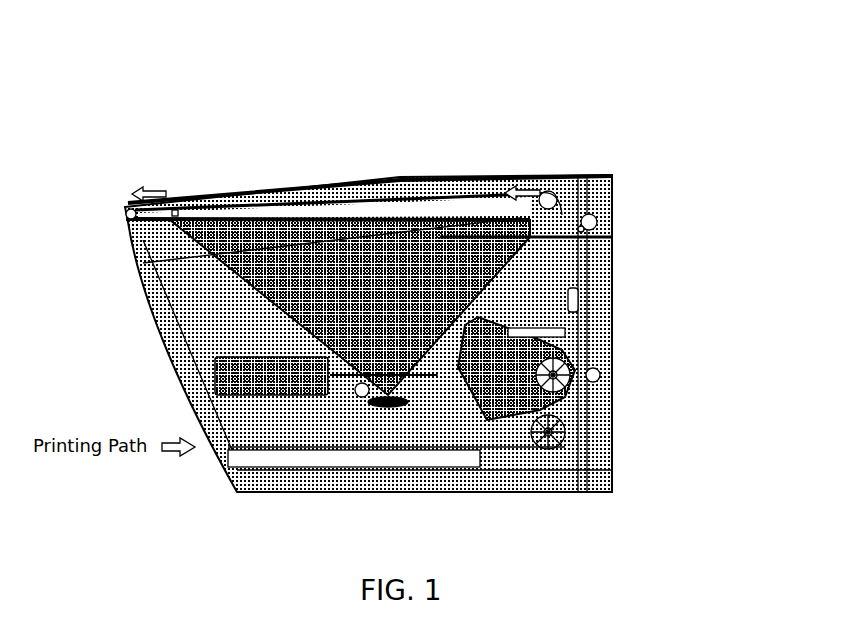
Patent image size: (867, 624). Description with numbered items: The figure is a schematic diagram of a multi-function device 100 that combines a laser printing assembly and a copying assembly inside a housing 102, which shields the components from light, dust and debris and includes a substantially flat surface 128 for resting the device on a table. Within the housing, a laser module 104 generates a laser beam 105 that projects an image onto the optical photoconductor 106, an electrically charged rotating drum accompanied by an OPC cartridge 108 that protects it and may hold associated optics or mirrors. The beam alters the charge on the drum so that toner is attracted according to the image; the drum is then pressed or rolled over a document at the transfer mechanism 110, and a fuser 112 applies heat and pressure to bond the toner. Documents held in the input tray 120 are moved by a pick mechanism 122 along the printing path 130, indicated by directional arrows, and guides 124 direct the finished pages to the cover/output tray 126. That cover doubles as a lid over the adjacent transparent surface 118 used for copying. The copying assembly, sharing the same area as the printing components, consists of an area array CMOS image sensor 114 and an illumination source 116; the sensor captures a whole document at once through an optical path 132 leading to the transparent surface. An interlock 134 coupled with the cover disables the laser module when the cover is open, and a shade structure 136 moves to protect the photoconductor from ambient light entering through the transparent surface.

The multi-function device 100 is at (593, 50).
The housing 102 is at (230, 490).
The laser module 104 is at (280, 357).
The laser beam 105 is at (420, 378).
The optical photoconductor 106 is at (545, 380).
The OPC cartridge 108 is at (475, 330).
The transfer mechanism 110 is at (598, 374).
The fuser 112 is at (596, 222).
The area array CMOS image sensor 114 is at (391, 408).
The illumination source 116 is at (360, 398).
The transparent surface 118 is at (340, 218).
The input tray 120 is at (298, 467).
The pick mechanism 122 is at (566, 431).
The guides 124 is at (536, 196).
The cover/output tray 126 is at (250, 207).
The substantially flat surface 128 is at (480, 488).
The printing path 130 is at (508, 448).
The optical path 132 is at (350, 299).
The interlock 134 is at (175, 210).
The shade structure 136 is at (517, 330).